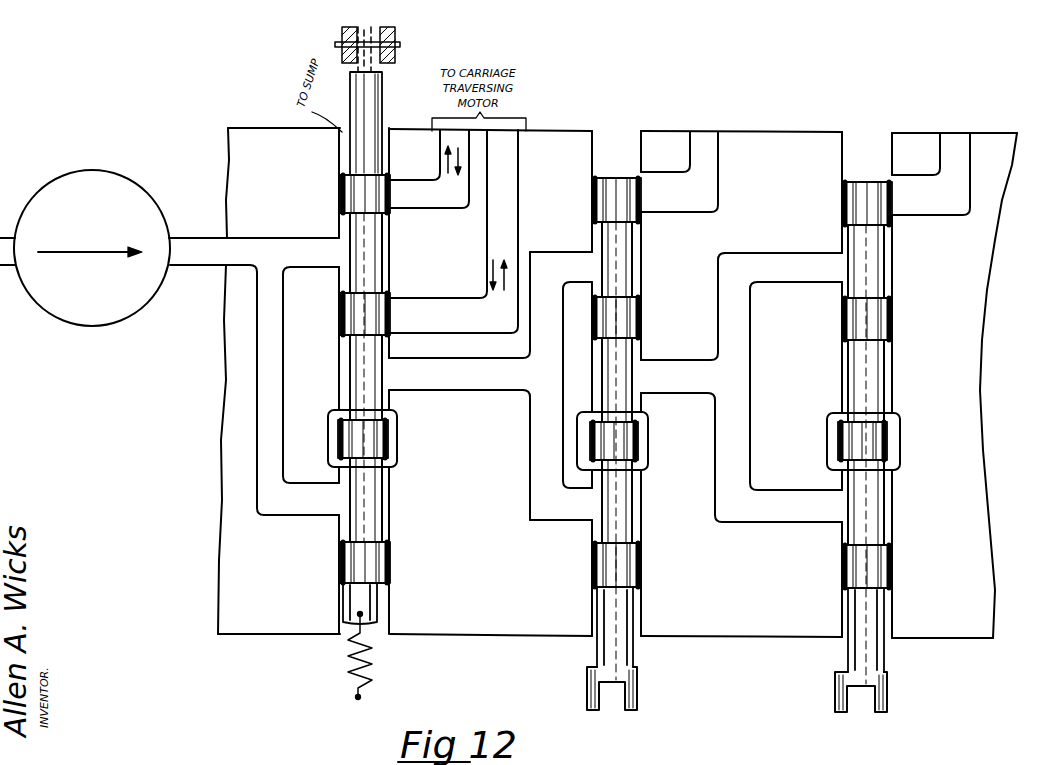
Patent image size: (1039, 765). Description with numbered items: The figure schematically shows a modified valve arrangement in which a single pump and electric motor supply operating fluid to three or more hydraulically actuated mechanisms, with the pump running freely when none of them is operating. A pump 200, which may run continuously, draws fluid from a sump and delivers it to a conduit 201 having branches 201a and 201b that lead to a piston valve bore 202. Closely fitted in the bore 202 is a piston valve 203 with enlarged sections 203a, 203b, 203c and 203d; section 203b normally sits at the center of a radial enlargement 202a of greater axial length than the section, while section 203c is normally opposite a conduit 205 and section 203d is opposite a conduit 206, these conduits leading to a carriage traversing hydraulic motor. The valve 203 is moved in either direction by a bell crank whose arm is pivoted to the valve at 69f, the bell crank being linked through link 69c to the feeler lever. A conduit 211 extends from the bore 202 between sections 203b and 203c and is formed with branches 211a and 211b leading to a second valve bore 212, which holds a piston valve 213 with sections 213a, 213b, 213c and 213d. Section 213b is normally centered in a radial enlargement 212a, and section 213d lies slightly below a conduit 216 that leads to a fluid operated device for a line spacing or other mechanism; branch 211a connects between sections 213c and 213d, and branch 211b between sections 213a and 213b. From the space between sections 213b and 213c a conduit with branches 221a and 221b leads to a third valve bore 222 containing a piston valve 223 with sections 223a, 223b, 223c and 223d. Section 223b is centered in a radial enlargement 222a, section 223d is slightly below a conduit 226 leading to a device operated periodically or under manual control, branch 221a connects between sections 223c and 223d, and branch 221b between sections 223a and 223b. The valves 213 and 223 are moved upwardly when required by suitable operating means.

The link 69c is at (389, 30).
The pivot 69f is at (402, 45).
The pump 200 is at (68, 313).
The conduit 201 is at (208, 244).
The branch conduit 201a is at (330, 248).
The branch conduit 201b is at (282, 350).
The piston valve bore 202 is at (345, 628).
The radial enlargement 202a is at (397, 445).
The piston valve 203 is at (382, 508).
The enlarged section 203a is at (390, 567).
The enlarged section 203b is at (338, 442).
The enlarged section 203c is at (340, 310).
The enlarged section 203d is at (340, 197).
The conduit 205 is at (450, 308).
The conduit 206 is at (436, 183).
The conduit 211 is at (455, 365).
The branch conduit 211a is at (573, 252).
The branch conduit 211b is at (541, 429).
The valve bore 212 is at (592, 636).
The radial enlargement 212a is at (648, 425).
The piston valve 213 is at (632, 508).
The enlarged section 213a is at (641, 566).
The enlarged section 213b is at (640, 444).
The enlarged section 213c is at (641, 317).
The enlarged section 213d is at (592, 200).
The conduit 216 is at (683, 178).
The branch conduit 221a is at (809, 258).
The branch conduit 221b is at (800, 522).
The valve bore 222 is at (838, 638).
The radial enlargement 222a is at (900, 428).
The piston valve 223 is at (884, 508).
The enlarged section 223a is at (892, 566).
The enlarged section 223b is at (889, 450).
The enlarged section 223c is at (842, 322).
The enlarged section 223d is at (842, 200).
The conduit 226 is at (921, 208).